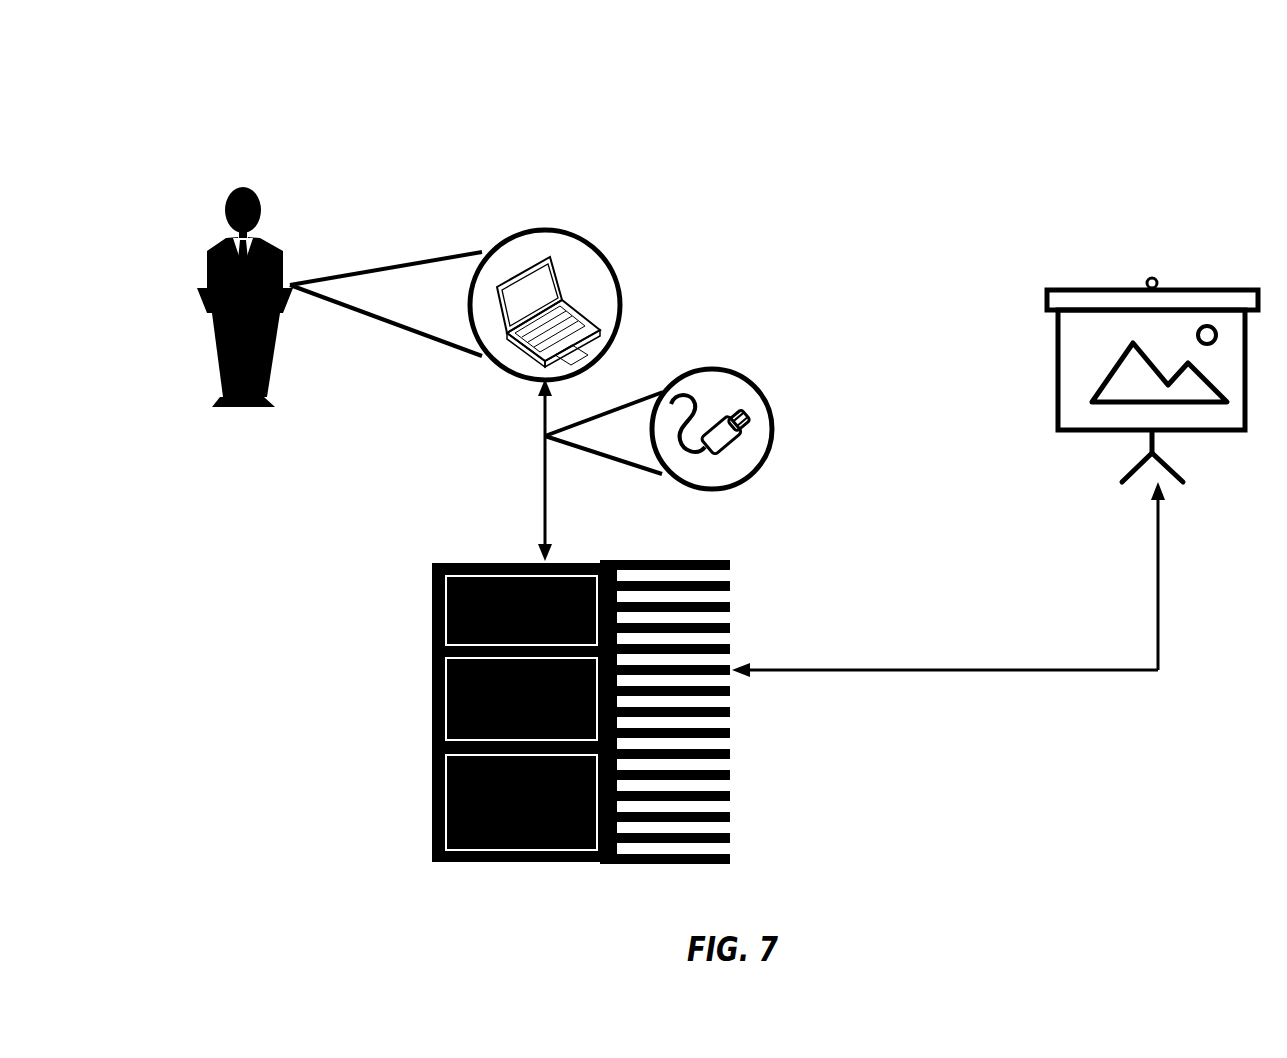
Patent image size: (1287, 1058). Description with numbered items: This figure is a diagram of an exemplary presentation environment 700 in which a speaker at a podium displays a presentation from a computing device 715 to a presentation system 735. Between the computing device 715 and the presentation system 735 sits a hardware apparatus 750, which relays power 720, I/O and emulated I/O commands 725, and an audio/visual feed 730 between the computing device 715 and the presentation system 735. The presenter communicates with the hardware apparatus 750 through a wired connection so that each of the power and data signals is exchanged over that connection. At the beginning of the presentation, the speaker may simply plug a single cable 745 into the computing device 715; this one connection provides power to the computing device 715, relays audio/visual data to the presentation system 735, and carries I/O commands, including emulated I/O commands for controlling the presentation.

The presentation environment 700 is at (148, 108).
The computing device 715 is at (490, 243).
The single cable 745 is at (544, 466).
The presentation system 735 is at (1050, 277).
The hardware apparatus 750 is at (425, 637).
The power 720 is at (542, 637).
The I/O and emulated I/O commands 725 is at (542, 729).
The audio/visual feed 730 is at (542, 832).